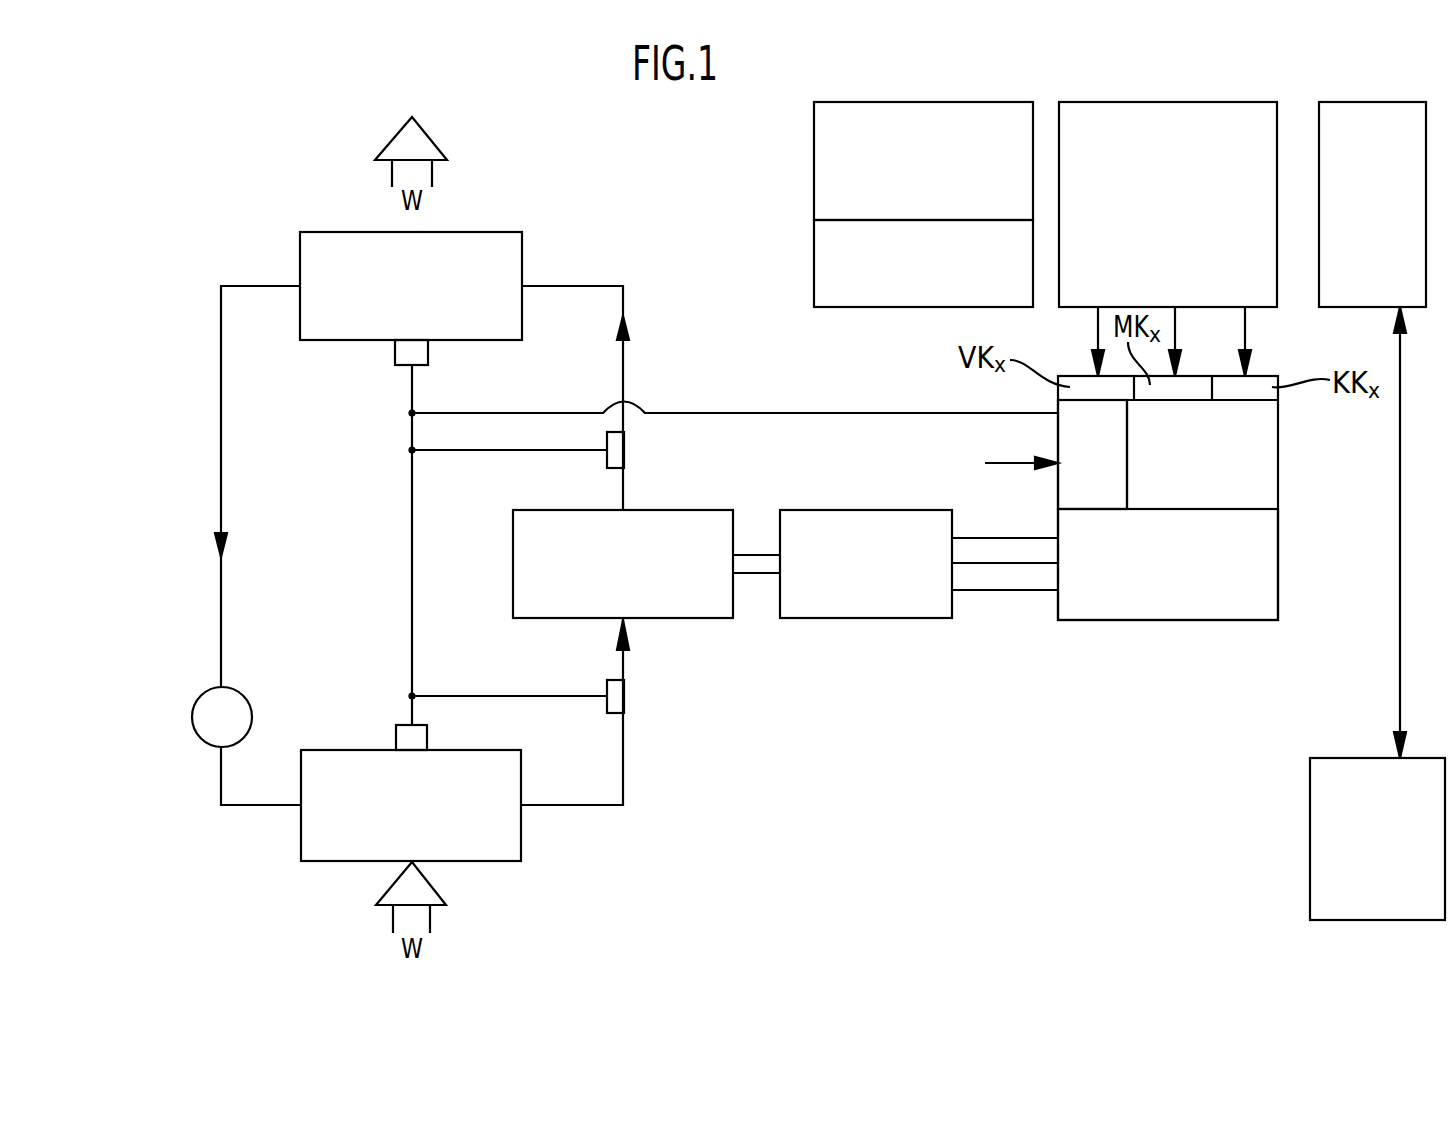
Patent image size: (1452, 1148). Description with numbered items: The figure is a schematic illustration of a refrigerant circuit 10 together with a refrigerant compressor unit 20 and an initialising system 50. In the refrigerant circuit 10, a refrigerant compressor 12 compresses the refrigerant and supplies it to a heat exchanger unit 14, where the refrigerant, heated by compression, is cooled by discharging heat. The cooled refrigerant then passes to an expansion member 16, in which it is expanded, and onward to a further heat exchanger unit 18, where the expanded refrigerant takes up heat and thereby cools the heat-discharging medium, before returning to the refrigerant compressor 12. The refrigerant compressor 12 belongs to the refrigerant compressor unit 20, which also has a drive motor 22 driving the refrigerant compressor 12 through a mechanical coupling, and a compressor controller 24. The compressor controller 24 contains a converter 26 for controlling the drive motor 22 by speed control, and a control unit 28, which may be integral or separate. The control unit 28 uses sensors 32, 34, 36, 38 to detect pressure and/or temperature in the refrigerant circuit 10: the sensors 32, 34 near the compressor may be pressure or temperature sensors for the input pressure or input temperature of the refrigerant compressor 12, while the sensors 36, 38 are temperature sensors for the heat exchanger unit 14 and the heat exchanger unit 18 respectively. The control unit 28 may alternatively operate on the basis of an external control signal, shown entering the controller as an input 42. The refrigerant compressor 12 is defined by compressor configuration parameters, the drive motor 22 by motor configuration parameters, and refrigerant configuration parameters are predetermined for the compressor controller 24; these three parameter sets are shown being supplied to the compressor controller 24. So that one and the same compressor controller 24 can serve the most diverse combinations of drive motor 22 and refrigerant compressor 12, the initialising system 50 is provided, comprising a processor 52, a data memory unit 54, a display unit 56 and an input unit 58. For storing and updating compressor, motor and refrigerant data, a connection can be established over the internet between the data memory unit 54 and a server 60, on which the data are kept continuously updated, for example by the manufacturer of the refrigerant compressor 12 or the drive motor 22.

The refrigerant circuit 10 is at (246, 222).
The refrigerant compressor 12 is at (680, 530).
The heat exchanger unit 14 is at (487, 252).
The expansion member 16 is at (203, 718).
The heat exchanger unit 18 is at (508, 838).
The refrigerant compressor unit 20 is at (688, 648).
The drive motor 22 is at (862, 598).
The compressor controller 24 is at (1253, 456).
The converter 26 is at (1153, 592).
The control unit 28 is at (1109, 473).
The sensor 32 is at (610, 457).
The sensor 34 is at (608, 690).
The temperature sensor 36 is at (403, 355).
The temperature sensor 38 is at (398, 735).
The input signal 42 is at (1005, 462).
The initialising system 50 is at (1232, 122).
The processor 52 is at (1179, 219).
The data memory unit 54 is at (1388, 219).
The display unit 56 is at (936, 178).
The input unit 58 is at (936, 284).
The server 60 is at (1397, 854).